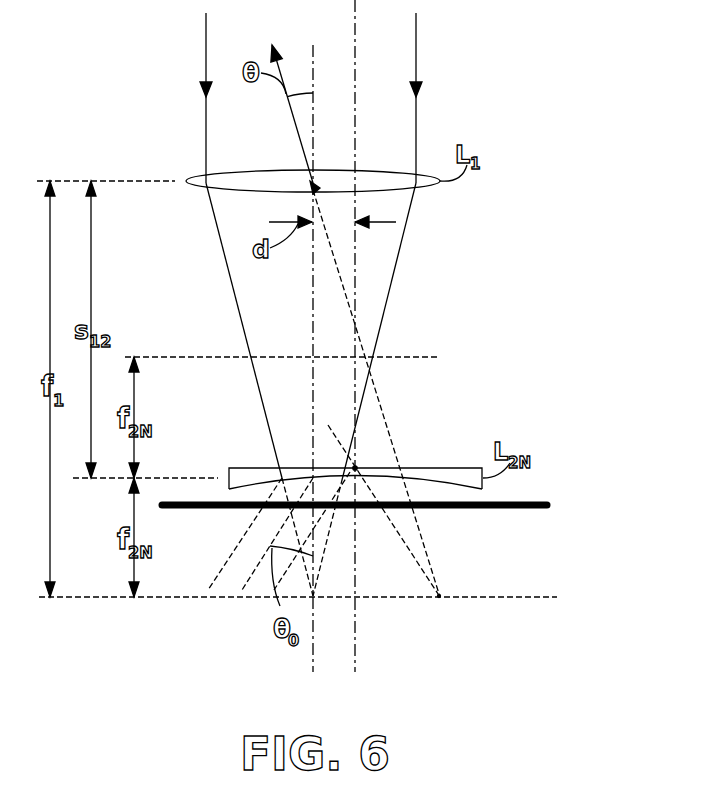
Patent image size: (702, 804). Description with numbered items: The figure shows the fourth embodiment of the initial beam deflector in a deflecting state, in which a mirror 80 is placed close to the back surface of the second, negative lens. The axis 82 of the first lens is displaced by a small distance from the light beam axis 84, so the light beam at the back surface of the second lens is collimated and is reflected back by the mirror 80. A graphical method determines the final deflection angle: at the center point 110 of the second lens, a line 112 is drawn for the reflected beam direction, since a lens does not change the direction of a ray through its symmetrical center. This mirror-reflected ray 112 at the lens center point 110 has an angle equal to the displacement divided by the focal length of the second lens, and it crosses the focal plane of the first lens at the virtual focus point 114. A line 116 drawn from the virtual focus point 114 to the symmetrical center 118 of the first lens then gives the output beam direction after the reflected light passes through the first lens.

The mirror 80 is at (547, 506).
The axis of lens L1 82 is at (312, 332).
The light beam axis 84 is at (355, 288).
The center point of lens L2N 110 is at (357, 466).
The line for the reflected light beam direction 112 is at (402, 540).
The virtual focus point 114 is at (439, 597).
The line from virtual focus point to center of lens L1 116 is at (373, 385).
The symmetrical center of lens L1 118 is at (313, 186).